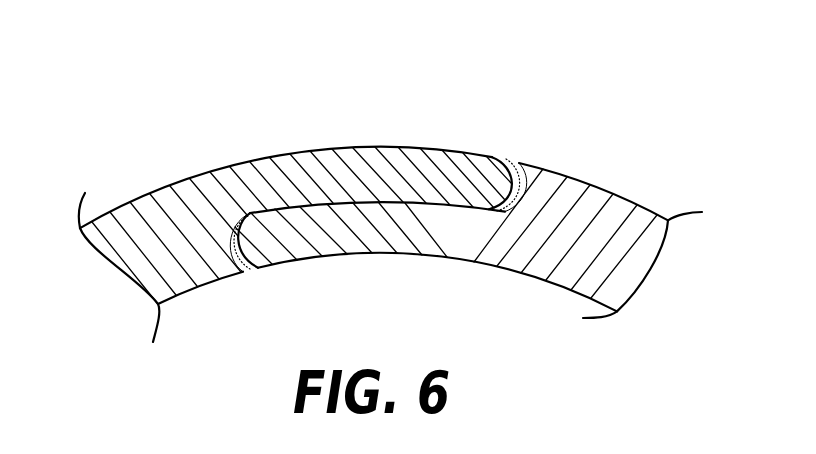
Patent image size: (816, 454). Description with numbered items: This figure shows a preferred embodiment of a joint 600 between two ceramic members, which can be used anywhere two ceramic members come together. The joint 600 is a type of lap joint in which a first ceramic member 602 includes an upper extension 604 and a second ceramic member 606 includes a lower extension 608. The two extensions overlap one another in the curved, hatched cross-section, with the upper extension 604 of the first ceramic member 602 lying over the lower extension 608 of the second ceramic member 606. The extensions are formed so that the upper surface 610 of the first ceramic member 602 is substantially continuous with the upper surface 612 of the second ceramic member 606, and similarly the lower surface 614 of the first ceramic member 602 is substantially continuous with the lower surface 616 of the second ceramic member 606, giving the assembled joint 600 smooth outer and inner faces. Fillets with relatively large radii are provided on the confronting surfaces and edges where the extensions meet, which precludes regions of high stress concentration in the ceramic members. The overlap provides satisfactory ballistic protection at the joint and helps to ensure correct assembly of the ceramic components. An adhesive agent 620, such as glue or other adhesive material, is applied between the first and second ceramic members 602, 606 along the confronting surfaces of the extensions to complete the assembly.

The joint 600 is at (372, 110).
The first ceramic member 602 is at (173, 207).
The upper extension 604 is at (463, 167).
The second ceramic member 606 is at (592, 217).
The lower extension 608 is at (300, 247).
The upper surface of first ceramic member 610 is at (267, 158).
The upper surface of second ceramic member 612 is at (565, 176).
The lower surface of first ceramic member 614 is at (210, 284).
The lower surface of second ceramic member 616 is at (560, 288).
The adhesive agent 620 is at (515, 160).